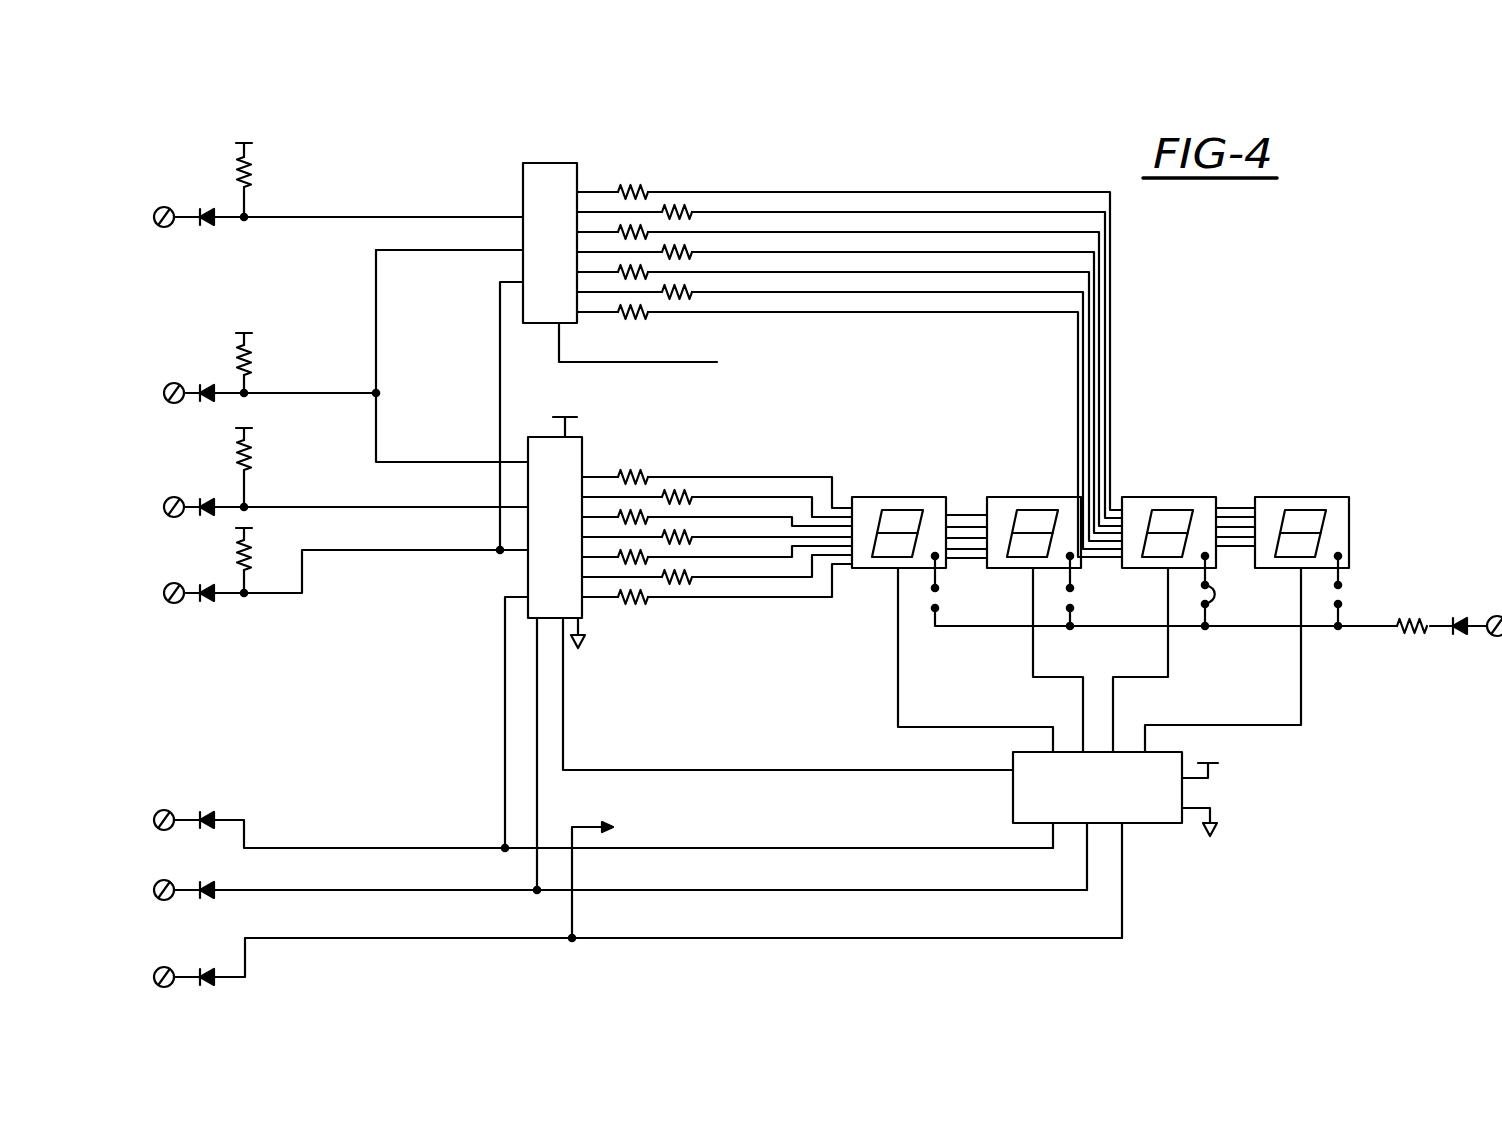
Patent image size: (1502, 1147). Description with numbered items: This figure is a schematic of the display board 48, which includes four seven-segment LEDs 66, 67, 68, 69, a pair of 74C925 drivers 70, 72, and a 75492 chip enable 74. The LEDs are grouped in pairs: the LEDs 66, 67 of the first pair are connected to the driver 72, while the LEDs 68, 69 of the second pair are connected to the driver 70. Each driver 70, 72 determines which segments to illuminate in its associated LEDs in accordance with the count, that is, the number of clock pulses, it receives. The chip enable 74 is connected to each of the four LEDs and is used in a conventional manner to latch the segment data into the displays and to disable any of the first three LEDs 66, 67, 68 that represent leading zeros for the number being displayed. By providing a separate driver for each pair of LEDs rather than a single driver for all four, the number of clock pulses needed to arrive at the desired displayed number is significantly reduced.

The display board 48 is at (1289, 335).
The seven-segment LED 66 is at (923, 496).
The seven-segment LED 67 is at (1002, 496).
The seven-segment LED 68 is at (1192, 496).
The seven-segment LED 69 is at (1337, 496).
The driver 70 is at (577, 177).
The driver 72 is at (527, 567).
The chip enable 74 is at (1170, 823).